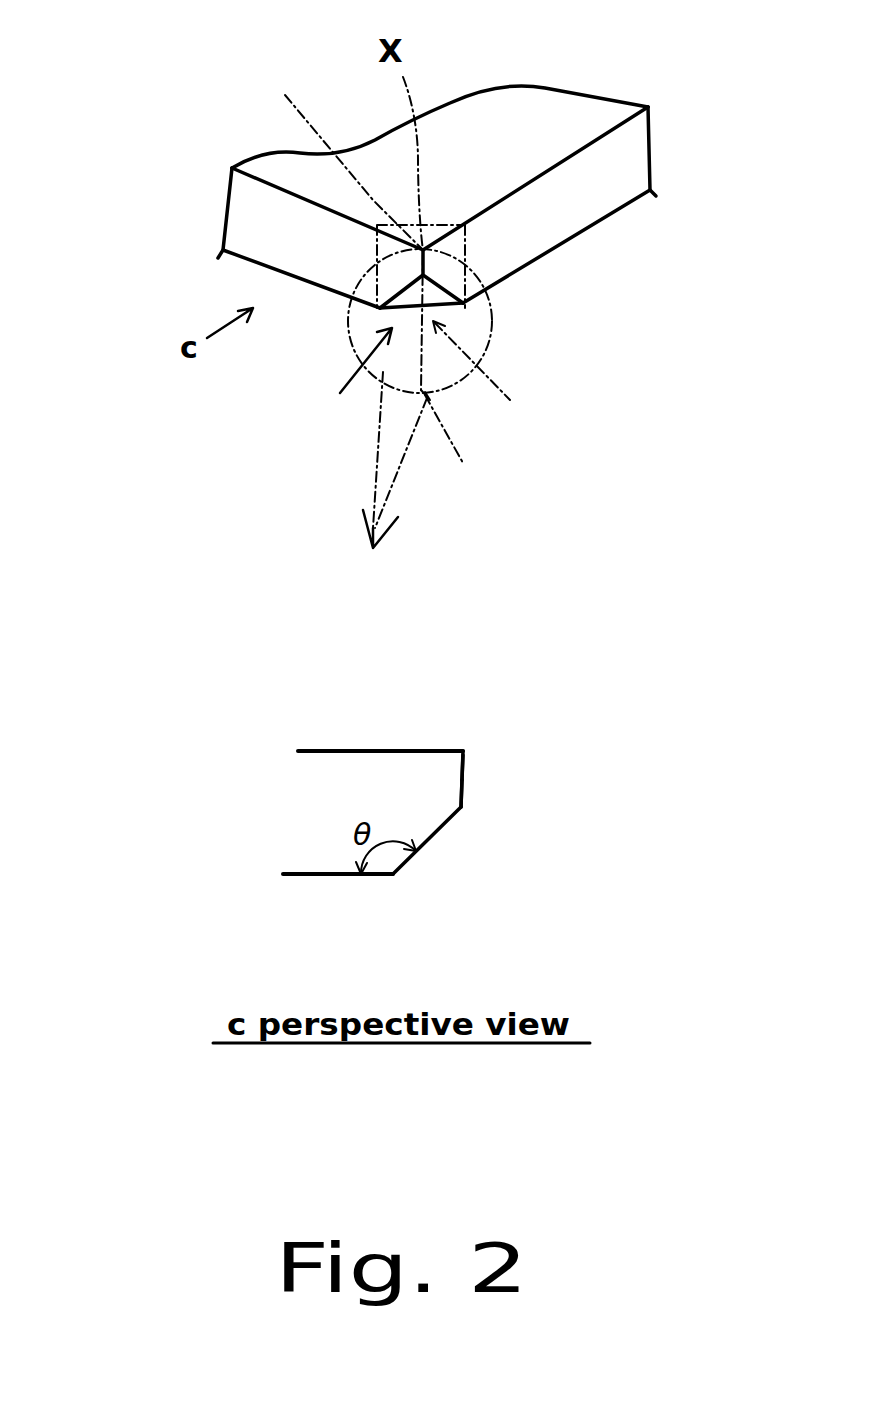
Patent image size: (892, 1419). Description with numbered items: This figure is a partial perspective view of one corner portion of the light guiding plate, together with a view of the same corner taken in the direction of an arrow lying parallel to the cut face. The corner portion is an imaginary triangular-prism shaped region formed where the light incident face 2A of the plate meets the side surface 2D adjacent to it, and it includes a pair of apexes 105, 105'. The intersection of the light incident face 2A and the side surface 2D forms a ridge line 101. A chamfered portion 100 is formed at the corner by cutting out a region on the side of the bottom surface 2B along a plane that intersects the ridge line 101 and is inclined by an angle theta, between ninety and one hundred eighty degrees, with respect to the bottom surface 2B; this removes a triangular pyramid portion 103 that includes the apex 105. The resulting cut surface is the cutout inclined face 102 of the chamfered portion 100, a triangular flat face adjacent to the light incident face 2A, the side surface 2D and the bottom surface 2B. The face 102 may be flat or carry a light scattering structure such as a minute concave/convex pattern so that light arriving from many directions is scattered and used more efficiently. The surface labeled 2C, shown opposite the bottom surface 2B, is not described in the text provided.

The light incident face 2A is at (252, 215).
The bottom surface 2B is at (615, 220).
The top surface of substrate 2C is at (503, 117).
The side surface 2D is at (630, 150).
The chamfered portion 100 is at (328, 387).
The ridge line 101 is at (435, 272).
The cutout inclined face 102 is at (445, 303).
The triangular pyramid portion 103 is at (467, 374).
The apex 105 is at (437, 460).
The apex 105' is at (401, 429).